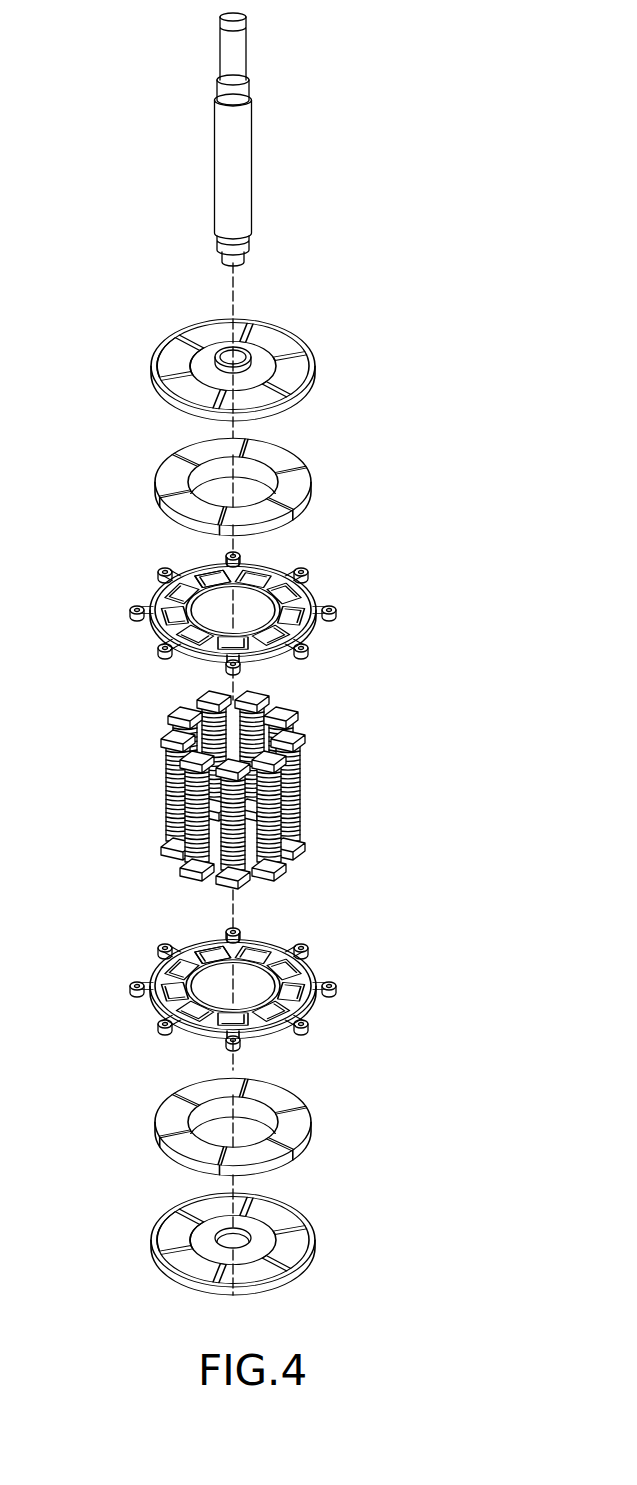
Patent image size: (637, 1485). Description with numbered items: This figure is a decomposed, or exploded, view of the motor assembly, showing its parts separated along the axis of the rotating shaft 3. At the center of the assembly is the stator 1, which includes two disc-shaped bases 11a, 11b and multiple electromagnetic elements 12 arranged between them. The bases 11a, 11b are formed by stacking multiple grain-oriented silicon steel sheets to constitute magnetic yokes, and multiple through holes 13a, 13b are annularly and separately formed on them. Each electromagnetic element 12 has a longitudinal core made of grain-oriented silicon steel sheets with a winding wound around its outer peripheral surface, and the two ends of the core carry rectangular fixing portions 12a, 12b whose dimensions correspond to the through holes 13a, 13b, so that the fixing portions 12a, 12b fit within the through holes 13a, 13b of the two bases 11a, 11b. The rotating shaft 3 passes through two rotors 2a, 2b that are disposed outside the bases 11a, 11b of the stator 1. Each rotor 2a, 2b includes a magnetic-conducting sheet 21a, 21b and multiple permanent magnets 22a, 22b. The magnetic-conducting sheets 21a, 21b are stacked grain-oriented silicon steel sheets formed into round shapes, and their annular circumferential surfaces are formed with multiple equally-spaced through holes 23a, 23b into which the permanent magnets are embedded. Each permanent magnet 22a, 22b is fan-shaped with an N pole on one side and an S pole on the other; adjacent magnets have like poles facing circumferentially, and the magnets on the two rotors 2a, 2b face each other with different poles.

The stator 1 is at (271, 789).
The rotor 2a is at (285, 1181).
The rotor 2b is at (288, 425).
The rotating shaft 3 is at (252, 172).
The disc-shaped base 11a is at (259, 985).
The disc-shaped base 11b is at (259, 608).
The electromagnetic element 12 is at (229, 790).
The fixing portion 12a is at (160, 858).
The fixing portion 12b is at (157, 758).
The through hole 13a is at (202, 953).
The through hole 13b is at (202, 576).
The magnetic-conducting sheet 21a is at (256, 1242).
The magnetic-conducting sheet 21b is at (253, 368).
The permanent magnet 22a is at (318, 1118).
The permanent magnet 22b is at (278, 486).
The through hole 23a is at (168, 1226).
The through hole 23b is at (165, 355).